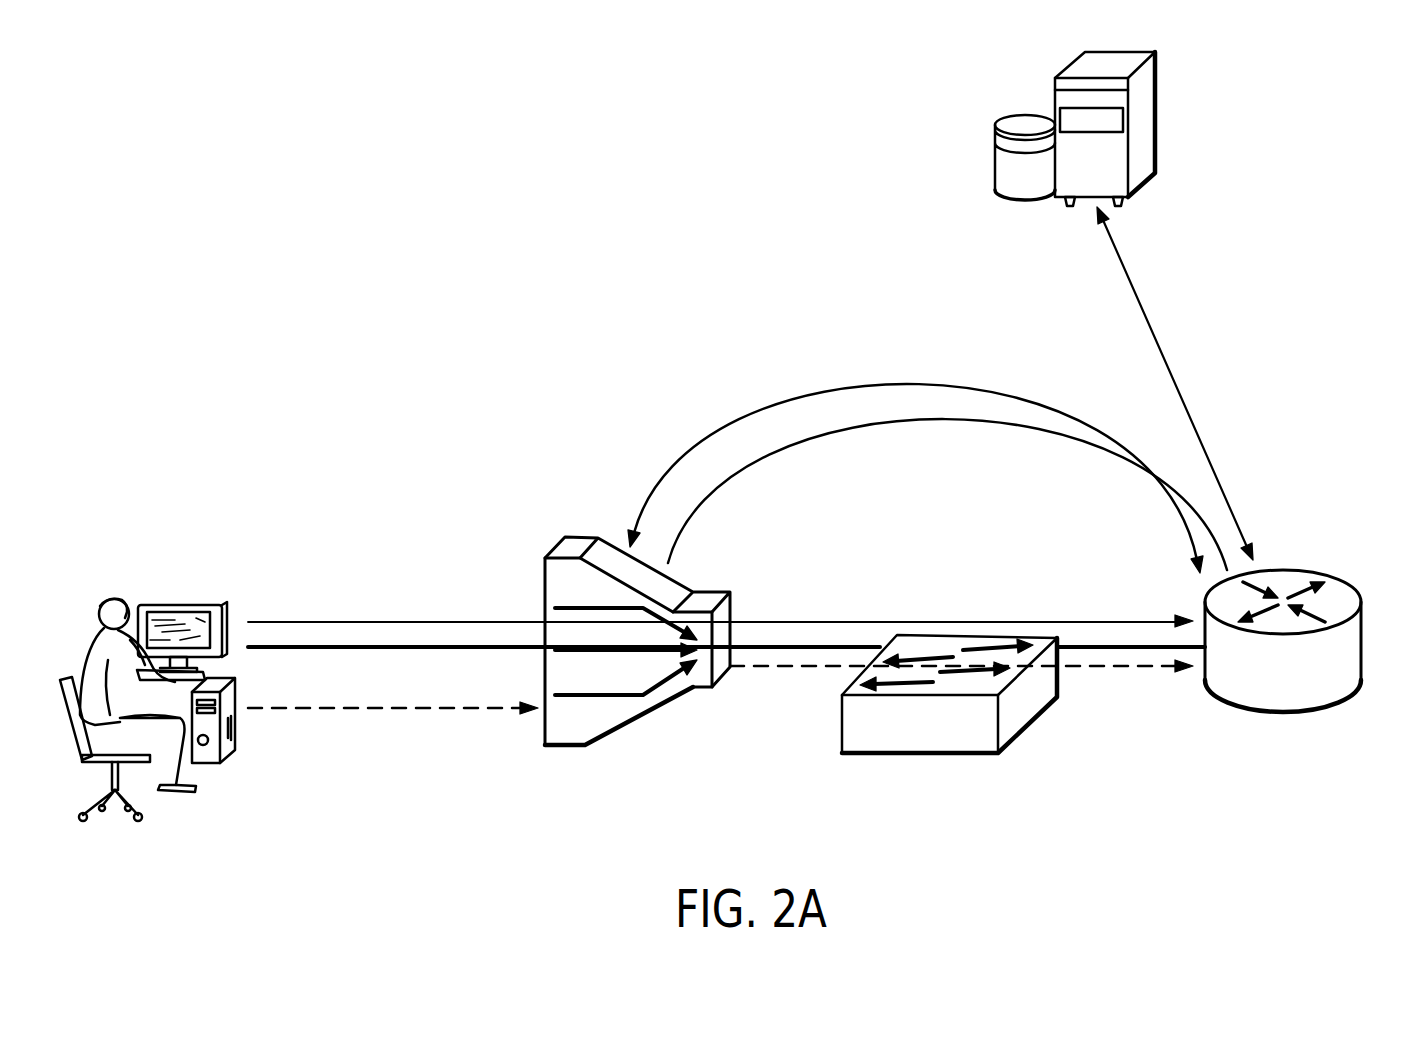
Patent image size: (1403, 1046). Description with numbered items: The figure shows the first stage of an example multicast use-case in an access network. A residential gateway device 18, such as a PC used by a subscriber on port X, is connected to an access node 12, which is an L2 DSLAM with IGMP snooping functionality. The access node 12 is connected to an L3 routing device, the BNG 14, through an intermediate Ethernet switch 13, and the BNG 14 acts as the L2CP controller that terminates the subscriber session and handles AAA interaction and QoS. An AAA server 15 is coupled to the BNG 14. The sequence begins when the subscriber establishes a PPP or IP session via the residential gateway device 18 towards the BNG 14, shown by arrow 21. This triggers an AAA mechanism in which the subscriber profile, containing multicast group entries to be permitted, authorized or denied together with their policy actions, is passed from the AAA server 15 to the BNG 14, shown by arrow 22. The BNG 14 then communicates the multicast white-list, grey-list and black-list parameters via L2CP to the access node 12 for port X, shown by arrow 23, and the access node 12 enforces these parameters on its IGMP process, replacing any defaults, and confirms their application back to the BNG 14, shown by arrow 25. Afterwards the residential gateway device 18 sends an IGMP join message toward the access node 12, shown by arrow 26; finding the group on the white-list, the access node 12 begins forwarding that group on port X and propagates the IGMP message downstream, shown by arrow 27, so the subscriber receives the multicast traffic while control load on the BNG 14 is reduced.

The access node 12 is at (636, 720).
The Ethernet switch 13 is at (1028, 728).
The BNG 14 is at (1343, 580).
The AAA server 15 is at (1160, 115).
The residential gateway device 18 is at (178, 602).
The arrow 21 is at (387, 622).
The arrow 22 is at (1175, 378).
The arrow 23 is at (835, 388).
The arrow 25 is at (885, 427).
The arrow 26 is at (370, 707).
The arrow 27 is at (798, 668).